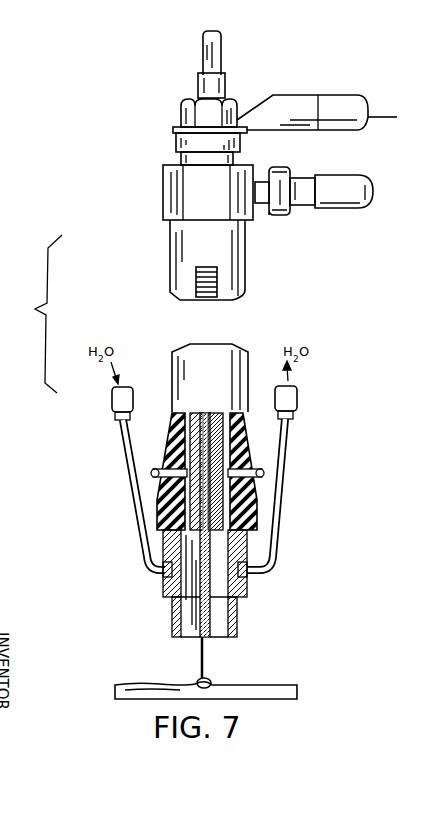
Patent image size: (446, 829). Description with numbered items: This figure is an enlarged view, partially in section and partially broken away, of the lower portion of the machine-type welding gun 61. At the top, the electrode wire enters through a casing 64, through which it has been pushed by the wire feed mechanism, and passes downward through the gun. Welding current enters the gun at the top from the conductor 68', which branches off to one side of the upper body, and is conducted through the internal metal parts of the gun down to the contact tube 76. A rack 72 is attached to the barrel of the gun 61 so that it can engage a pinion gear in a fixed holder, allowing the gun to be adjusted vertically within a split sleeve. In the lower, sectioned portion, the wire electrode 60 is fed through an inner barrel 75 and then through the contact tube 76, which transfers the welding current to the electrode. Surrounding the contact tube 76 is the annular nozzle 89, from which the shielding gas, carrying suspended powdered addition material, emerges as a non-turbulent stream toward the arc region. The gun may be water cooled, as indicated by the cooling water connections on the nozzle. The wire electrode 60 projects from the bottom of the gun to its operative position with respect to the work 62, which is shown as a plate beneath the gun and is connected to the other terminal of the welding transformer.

The casing 64 is at (216, 54).
The conductor 68' is at (320, 110).
The welding gun 61 is at (182, 240).
The rack 72 is at (230, 303).
The inner barrel 75 is at (223, 430).
The annular nozzle 89 is at (173, 613).
The contact tube 76 is at (210, 610).
The wire electrode 60 is at (201, 661).
The work 62 is at (232, 687).